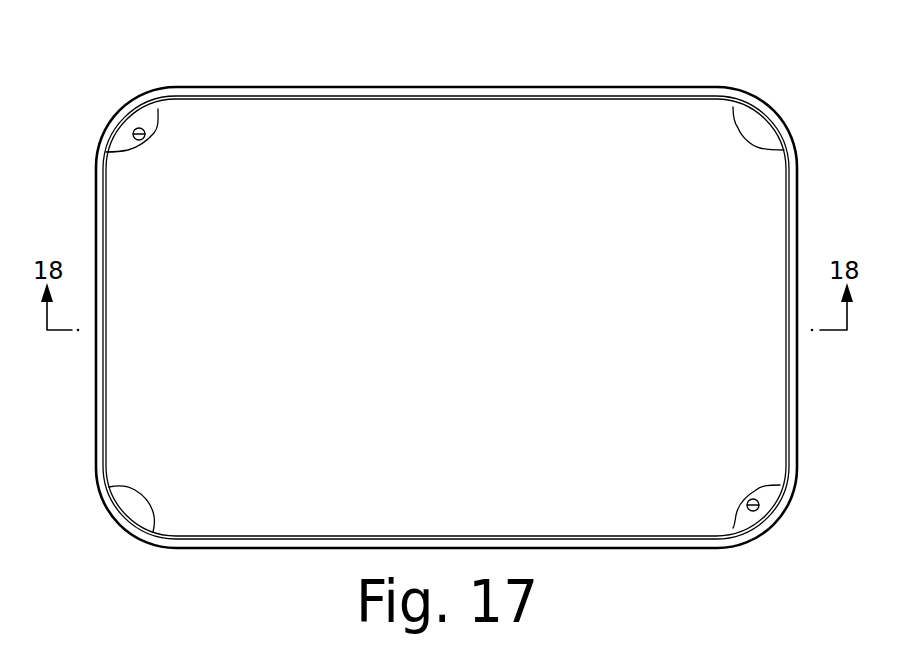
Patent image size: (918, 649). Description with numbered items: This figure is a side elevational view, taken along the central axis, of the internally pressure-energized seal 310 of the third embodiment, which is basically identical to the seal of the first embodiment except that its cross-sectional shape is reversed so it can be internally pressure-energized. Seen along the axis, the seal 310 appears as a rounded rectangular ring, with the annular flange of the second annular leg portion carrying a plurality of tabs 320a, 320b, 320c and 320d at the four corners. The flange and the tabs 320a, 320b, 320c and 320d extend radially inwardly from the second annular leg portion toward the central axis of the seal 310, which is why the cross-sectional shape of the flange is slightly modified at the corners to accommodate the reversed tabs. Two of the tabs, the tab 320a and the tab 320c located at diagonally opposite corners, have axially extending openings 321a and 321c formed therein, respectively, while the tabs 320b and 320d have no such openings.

The internally pressure-energized seal 310 is at (652, 70).
The tab 320a is at (737, 517).
The tab 320b is at (738, 133).
The tab 320c is at (159, 128).
The tab 320d is at (153, 500).
The axially extending opening 321a is at (746, 500).
The axially extending opening 321c is at (145, 138).